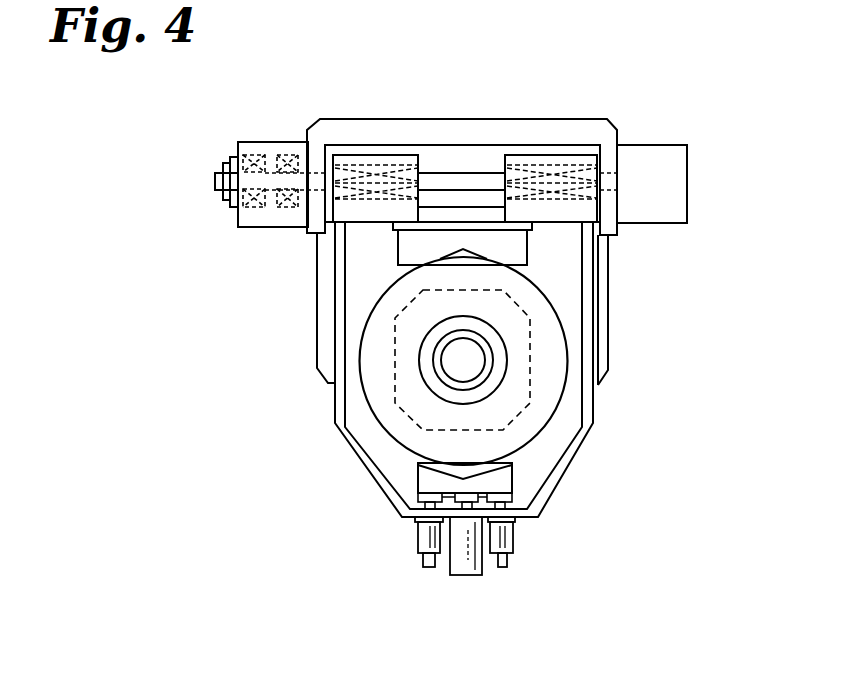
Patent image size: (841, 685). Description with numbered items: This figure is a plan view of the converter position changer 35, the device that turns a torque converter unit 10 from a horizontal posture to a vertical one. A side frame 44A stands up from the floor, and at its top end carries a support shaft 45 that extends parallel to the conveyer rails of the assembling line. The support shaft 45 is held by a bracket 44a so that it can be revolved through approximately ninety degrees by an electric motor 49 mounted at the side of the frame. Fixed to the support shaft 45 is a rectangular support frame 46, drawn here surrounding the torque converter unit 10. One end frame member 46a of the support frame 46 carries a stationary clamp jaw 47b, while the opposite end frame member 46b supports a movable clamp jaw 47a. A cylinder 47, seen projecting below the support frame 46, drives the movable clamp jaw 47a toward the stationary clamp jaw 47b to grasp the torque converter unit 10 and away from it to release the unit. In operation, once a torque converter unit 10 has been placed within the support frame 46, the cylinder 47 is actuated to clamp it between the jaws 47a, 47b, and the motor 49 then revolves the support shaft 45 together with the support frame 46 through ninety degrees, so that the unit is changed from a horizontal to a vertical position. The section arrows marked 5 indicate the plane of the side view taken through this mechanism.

The section line V-V 5 is at (470, 105).
The torque converter unit 10 is at (556, 345).
The converter position changer 35 is at (632, 112).
The side frame 44A is at (560, 119).
The bracket 44a is at (617, 233).
The support shaft 45 is at (493, 175).
The support frame 46 is at (588, 452).
The end frame member 46a is at (371, 224).
The end frame member 46b is at (402, 512).
The cylinder 47 is at (482, 573).
The movable clamp jaw 47a is at (512, 490).
The stationary clamp jaw 47b is at (530, 247).
The electric motor 49 is at (688, 183).